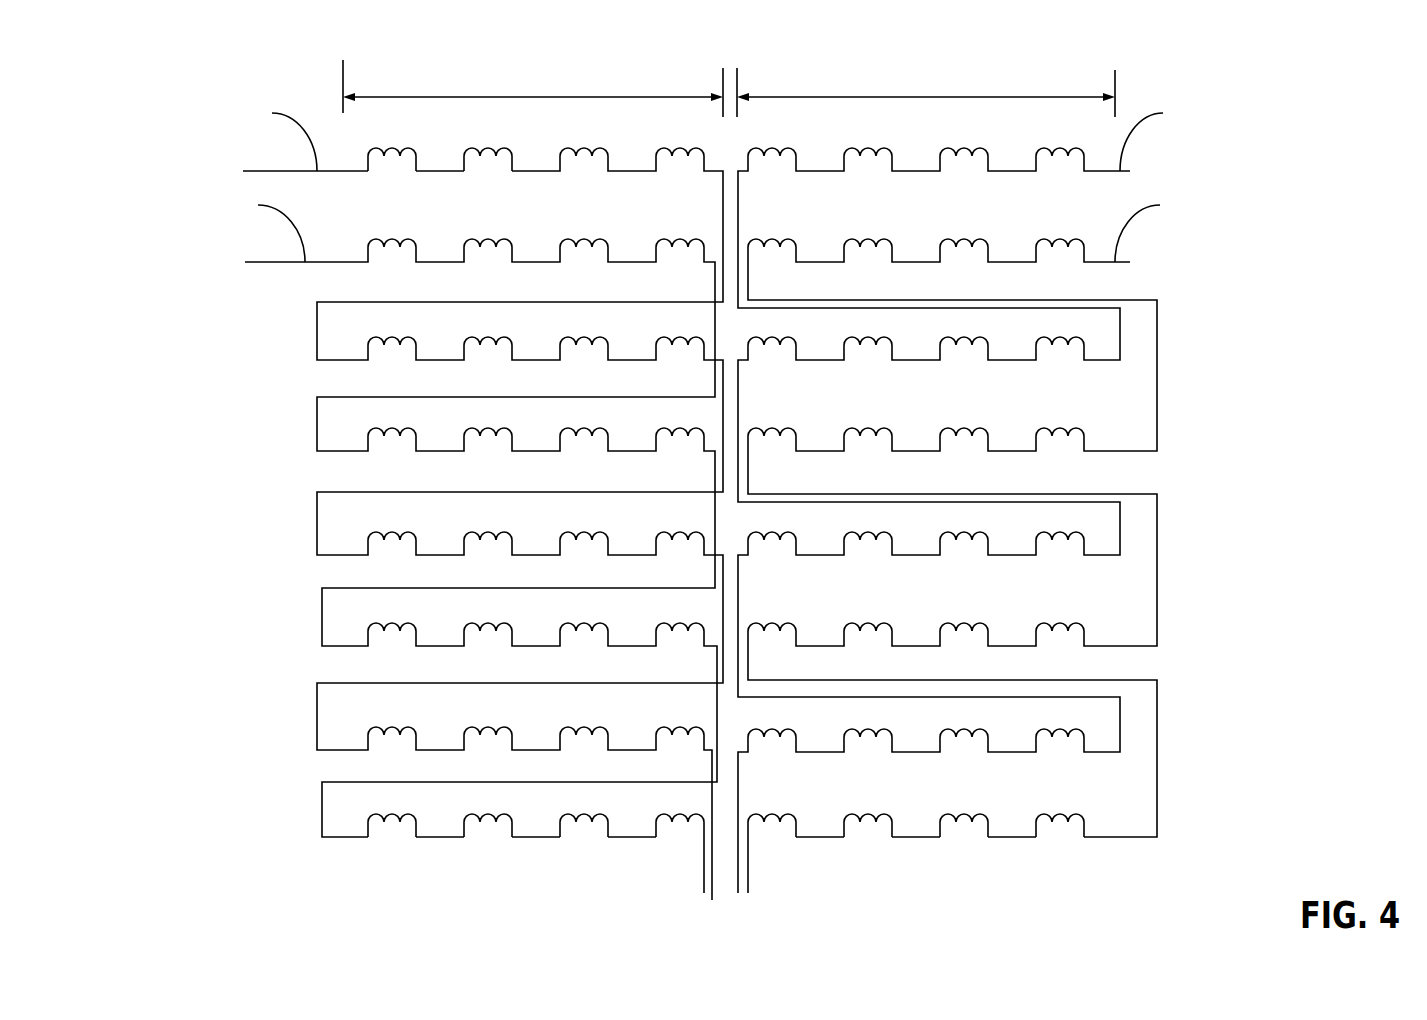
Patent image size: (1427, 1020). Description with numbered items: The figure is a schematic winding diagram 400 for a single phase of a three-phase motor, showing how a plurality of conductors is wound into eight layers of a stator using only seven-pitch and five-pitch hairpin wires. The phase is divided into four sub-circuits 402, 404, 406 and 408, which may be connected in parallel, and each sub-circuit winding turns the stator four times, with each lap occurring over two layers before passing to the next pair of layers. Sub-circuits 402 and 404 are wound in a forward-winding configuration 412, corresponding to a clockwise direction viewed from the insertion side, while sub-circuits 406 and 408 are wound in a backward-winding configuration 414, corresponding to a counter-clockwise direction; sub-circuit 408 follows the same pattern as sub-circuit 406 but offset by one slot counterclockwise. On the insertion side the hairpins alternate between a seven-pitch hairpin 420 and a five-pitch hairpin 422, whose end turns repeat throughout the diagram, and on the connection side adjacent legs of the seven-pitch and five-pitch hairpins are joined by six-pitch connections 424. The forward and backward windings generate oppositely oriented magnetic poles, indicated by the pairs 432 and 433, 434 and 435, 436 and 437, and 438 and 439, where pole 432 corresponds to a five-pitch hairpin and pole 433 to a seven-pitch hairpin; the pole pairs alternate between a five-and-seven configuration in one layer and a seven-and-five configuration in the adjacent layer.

The winding diagram 400 is at (1331, 62).
The sub-circuit 402 is at (276, 137).
The sub-circuit 404 is at (263, 228).
The sub-circuit 406 is at (1161, 146).
The sub-circuit 408 is at (1159, 236).
The forward-winding configuration 412 is at (309, 62).
The backward-winding configuration 414 is at (1050, 70).
The 7 pitch hairpin 420 is at (389, 179).
The 5 pitch hairpin 422 is at (489, 179).
The 6 pitch connection 424 is at (440, 171).
The pole pair member 432 is at (392, 839).
The pole pair member 433 is at (772, 839).
The pole pair member 434 is at (488, 839).
The pole pair member 435 is at (868, 839).
The pole pair member 436 is at (584, 839).
The pole pair member 437 is at (964, 839).
The pole pair member 438 is at (679, 839).
The pole pair member 439 is at (1060, 839).